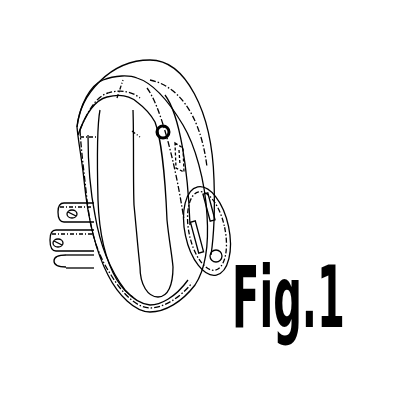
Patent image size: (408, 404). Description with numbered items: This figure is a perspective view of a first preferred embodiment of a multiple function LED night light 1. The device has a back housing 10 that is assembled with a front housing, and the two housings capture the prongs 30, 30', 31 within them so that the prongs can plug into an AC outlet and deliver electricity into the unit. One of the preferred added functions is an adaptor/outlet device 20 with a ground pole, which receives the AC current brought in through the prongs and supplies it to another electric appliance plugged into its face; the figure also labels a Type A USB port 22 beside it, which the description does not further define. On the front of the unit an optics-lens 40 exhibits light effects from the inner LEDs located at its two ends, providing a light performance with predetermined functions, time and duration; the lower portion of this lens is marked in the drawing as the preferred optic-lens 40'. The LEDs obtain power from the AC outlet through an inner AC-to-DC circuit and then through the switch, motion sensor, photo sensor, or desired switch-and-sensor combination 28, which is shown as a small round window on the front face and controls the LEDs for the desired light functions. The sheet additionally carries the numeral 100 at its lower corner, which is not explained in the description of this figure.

The multiple function LED night light 1 is at (190, 44).
The back housing 10 is at (108, 85).
The adaptor/outlet device 20 is at (211, 188).
The Type A USB port 22 is at (183, 158).
The switch and sensor combination 28 is at (171, 129).
The prong 30 is at (72, 187).
The prong 30' is at (67, 292).
The prong 31 is at (80, 268).
The optics-lens 40 is at (157, 183).
The preferred optic lens opening 40' is at (125, 249).
The lighting system 100 is at (356, 398).